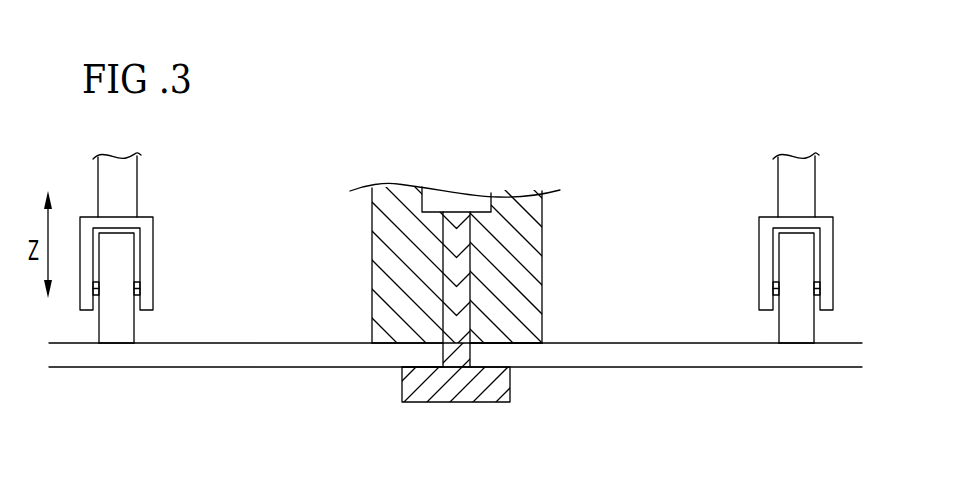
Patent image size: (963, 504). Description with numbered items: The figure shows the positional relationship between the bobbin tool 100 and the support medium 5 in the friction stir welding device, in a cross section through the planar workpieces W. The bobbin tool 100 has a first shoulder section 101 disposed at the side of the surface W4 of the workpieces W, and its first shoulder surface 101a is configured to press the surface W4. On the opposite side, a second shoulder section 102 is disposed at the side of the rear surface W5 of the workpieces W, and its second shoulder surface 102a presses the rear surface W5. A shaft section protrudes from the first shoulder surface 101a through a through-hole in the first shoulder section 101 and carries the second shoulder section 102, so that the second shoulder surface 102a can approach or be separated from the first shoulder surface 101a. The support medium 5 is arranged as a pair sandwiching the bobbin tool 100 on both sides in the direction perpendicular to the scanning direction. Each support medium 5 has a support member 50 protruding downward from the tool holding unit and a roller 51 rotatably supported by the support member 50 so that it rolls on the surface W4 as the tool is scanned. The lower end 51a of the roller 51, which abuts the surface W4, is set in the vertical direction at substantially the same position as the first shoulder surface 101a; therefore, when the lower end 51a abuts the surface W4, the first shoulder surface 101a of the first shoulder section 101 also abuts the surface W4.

The support medium 5 is at (143, 230).
The support member 50 is at (120, 193).
The roller 51 is at (117, 263).
The lower end of the roller 51a is at (117, 344).
The bobbin tool 100 is at (476, 252).
The first shoulder section 101 is at (525, 277).
The first shoulder surface 101a is at (530, 344).
The second shoulder section 102 is at (453, 402).
The second shoulder surface 102a is at (432, 365).
The workpieces W is at (455, 384).
The surface of the workpieces W4 is at (580, 343).
The rear surface of the workpieces W5 is at (621, 368).